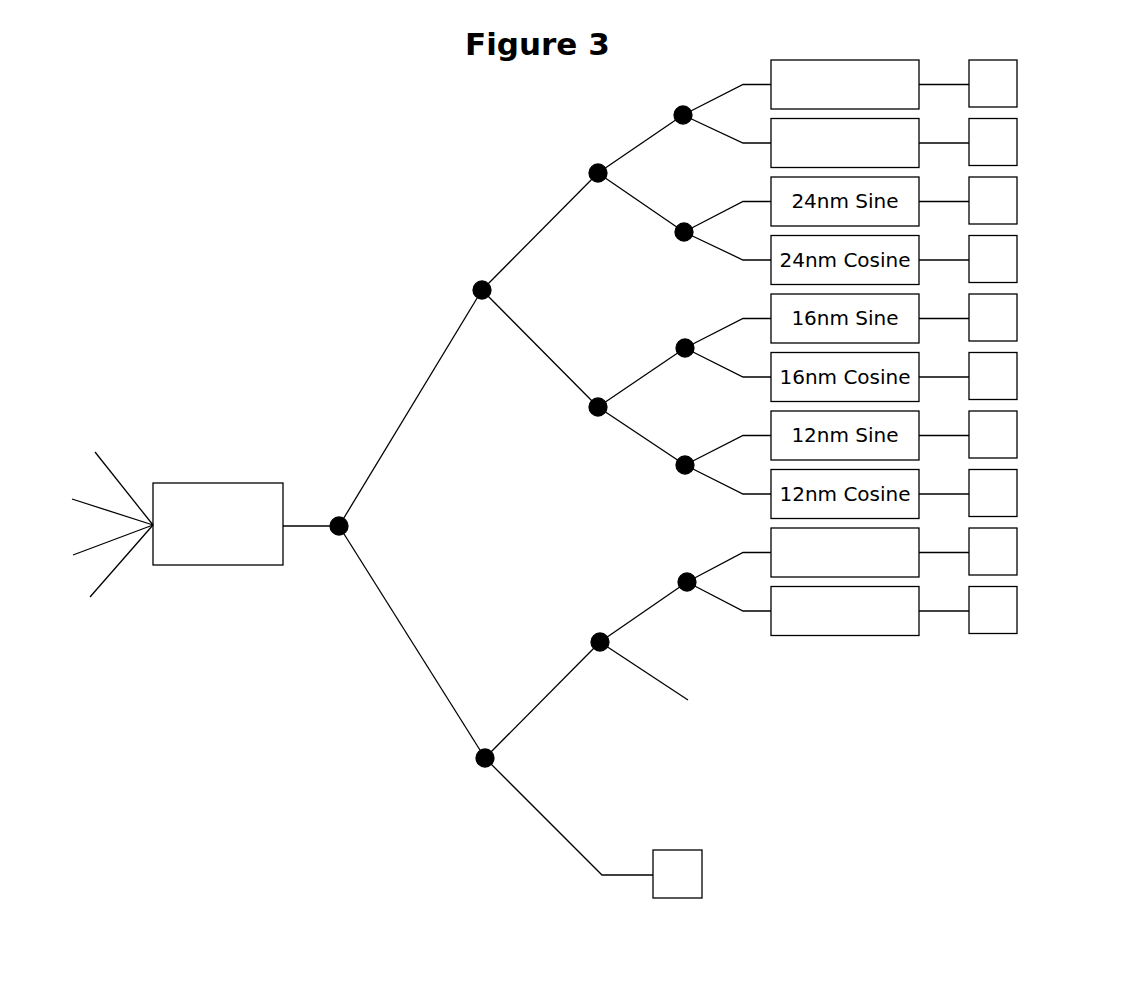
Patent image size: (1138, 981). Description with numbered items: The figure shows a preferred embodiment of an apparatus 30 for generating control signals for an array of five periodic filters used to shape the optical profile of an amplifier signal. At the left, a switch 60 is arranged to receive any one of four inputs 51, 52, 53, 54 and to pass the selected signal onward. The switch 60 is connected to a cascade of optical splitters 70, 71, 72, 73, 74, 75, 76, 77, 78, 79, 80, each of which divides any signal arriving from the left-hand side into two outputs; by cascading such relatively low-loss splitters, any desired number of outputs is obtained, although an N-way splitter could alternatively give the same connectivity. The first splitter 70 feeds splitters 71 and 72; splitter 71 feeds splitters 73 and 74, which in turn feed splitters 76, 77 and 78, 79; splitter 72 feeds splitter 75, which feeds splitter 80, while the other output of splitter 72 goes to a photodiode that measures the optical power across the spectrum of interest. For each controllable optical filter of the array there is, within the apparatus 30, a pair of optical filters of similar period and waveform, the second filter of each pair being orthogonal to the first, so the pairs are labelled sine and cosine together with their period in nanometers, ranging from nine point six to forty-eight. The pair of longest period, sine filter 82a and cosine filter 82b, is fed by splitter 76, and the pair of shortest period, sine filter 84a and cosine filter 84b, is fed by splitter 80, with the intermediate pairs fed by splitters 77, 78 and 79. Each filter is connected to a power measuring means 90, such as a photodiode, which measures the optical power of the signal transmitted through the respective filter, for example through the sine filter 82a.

The apparatus 30 is at (402, 383).
The input optical fiber 51 is at (108, 481).
The input optical fiber 52 is at (98, 505).
The input optical fiber 53 is at (99, 546).
The input optical fiber 54 is at (106, 572).
The switch 60 is at (197, 483).
The optical splitter 70 is at (337, 535).
The optical splitter 71 is at (482, 281).
The optical splitter 72 is at (483, 767).
The optical splitter 73 is at (596, 164).
The optical splitter 74 is at (598, 398).
The optical splitter 75 is at (593, 653).
The optical splitter 76 is at (683, 106).
The optical splitter 77 is at (684, 223).
The optical splitter 78 is at (685, 339).
The optical splitter 79 is at (685, 456).
The optical splitter 80 is at (682, 595).
The sine filter of longest period 82a is at (917, 62).
The cosine filter of longest period 82b is at (917, 121).
The sine filter of shortest period 84a is at (921, 562).
The cosine filter of shortest period 84b is at (921, 620).
The power measuring means 90 is at (1017, 84).